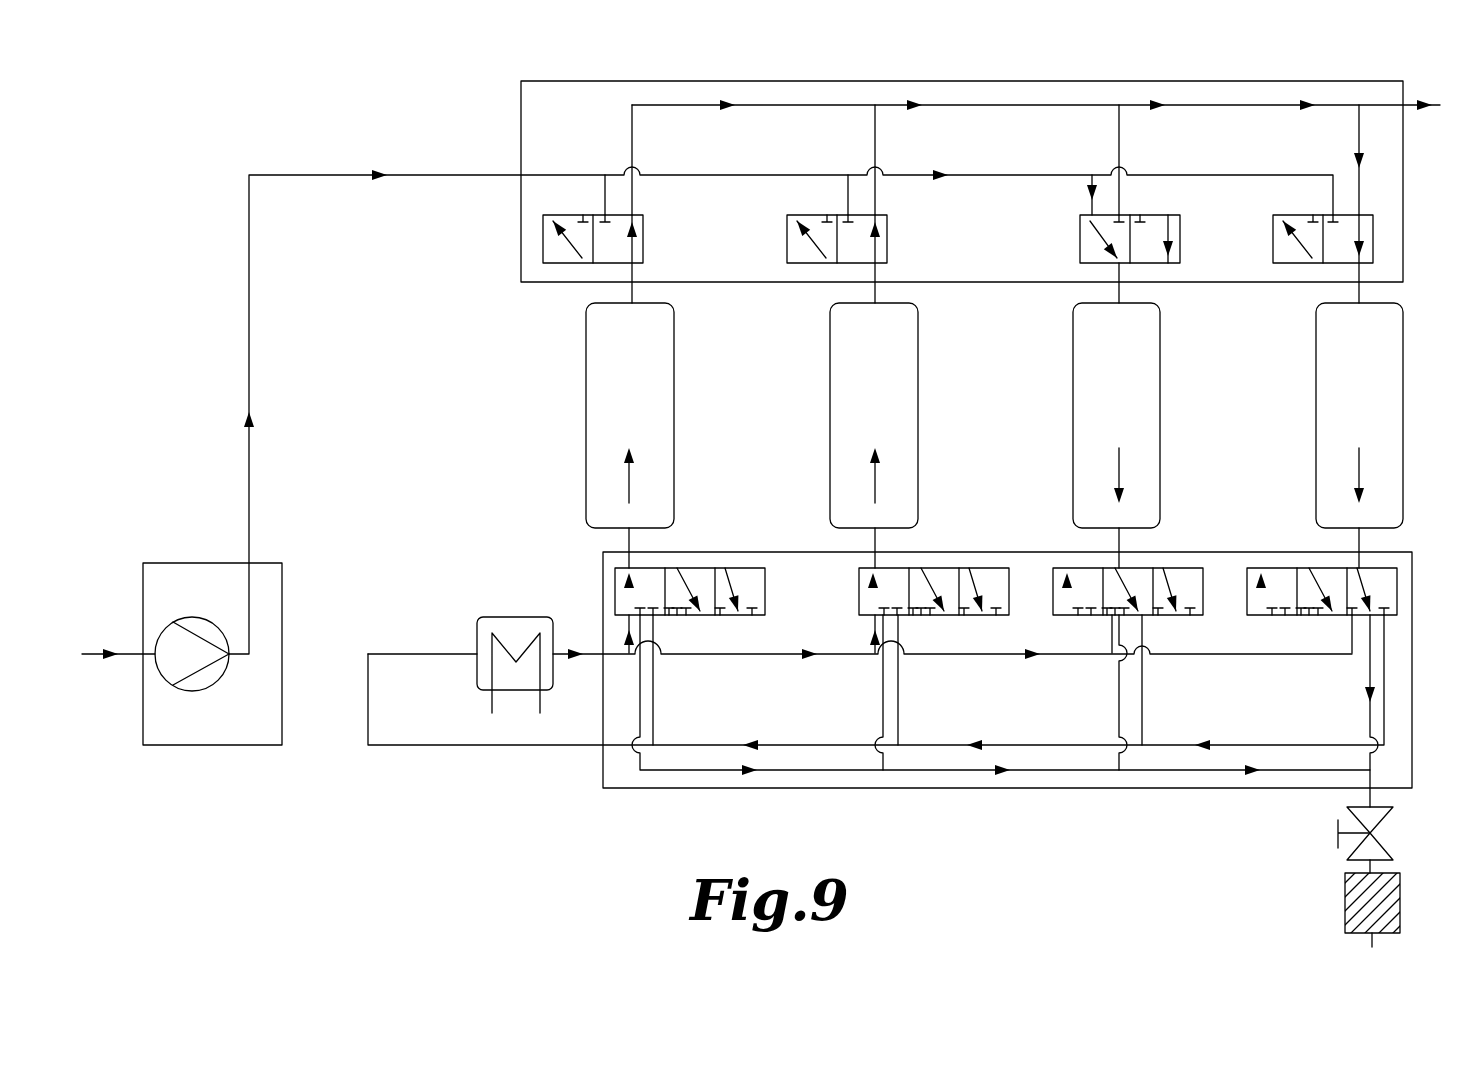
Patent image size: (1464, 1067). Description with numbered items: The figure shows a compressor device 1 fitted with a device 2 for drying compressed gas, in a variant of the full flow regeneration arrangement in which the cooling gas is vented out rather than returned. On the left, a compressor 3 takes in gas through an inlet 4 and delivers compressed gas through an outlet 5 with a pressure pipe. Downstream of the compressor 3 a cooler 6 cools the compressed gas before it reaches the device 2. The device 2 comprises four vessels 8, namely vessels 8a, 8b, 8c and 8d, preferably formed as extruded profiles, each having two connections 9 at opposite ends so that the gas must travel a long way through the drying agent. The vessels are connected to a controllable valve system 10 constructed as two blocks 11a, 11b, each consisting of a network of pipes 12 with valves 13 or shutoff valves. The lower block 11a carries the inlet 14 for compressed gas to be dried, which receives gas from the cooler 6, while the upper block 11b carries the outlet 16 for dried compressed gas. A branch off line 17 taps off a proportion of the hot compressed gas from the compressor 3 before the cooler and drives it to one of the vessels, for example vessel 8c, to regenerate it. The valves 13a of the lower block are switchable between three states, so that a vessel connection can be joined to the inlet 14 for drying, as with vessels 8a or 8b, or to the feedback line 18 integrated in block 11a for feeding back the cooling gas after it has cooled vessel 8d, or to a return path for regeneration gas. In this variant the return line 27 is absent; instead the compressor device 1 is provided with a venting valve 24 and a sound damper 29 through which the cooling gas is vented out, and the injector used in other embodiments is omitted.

The compressor device 1 is at (150, 124).
The device for drying compressed gas 2 is at (1415, 814).
The compressor 3 is at (193, 617).
The inlet 4 is at (98, 654).
The outlet 5 is at (240, 650).
The cooler 6 is at (493, 617).
The vessels 8 is at (910, 435).
The vessel 8a is at (603, 372).
The vessel 8b is at (845, 375).
The vessel 8c is at (1086, 380).
The vessel 8d is at (1328, 373).
The connections 9 is at (629, 298).
The controllable valve system 10 is at (1404, 285).
The block 11a is at (603, 773).
The block 11b is at (521, 100).
The pipes 12 is at (992, 175).
The valves 13 is at (810, 215).
The valves 13a is at (692, 567).
The inlet 14 is at (603, 654).
The outlet 16 is at (1406, 105).
The branch off line 17 is at (249, 313).
The feedback line 18 is at (928, 745).
The venting valve 24 is at (1348, 857).
The return line 27 is at (1027, 771).
The sound damper 29 is at (1357, 915).